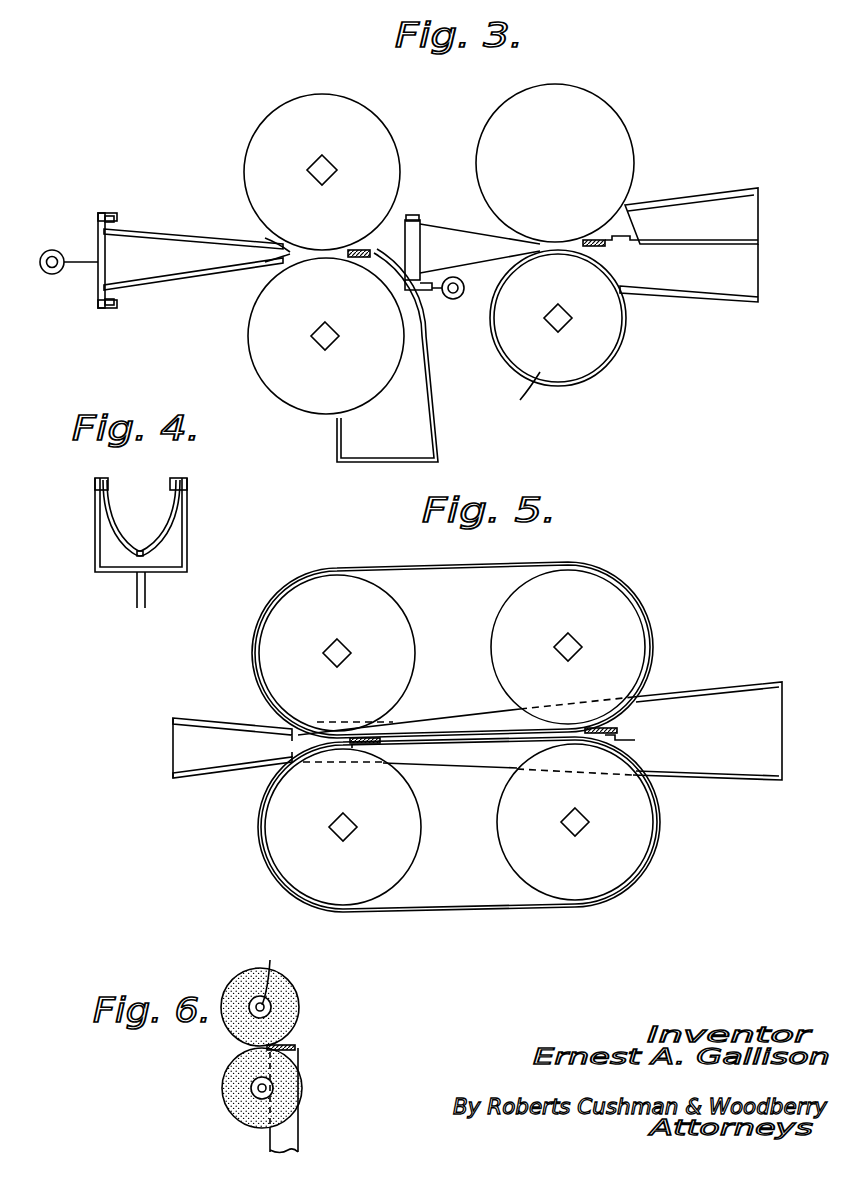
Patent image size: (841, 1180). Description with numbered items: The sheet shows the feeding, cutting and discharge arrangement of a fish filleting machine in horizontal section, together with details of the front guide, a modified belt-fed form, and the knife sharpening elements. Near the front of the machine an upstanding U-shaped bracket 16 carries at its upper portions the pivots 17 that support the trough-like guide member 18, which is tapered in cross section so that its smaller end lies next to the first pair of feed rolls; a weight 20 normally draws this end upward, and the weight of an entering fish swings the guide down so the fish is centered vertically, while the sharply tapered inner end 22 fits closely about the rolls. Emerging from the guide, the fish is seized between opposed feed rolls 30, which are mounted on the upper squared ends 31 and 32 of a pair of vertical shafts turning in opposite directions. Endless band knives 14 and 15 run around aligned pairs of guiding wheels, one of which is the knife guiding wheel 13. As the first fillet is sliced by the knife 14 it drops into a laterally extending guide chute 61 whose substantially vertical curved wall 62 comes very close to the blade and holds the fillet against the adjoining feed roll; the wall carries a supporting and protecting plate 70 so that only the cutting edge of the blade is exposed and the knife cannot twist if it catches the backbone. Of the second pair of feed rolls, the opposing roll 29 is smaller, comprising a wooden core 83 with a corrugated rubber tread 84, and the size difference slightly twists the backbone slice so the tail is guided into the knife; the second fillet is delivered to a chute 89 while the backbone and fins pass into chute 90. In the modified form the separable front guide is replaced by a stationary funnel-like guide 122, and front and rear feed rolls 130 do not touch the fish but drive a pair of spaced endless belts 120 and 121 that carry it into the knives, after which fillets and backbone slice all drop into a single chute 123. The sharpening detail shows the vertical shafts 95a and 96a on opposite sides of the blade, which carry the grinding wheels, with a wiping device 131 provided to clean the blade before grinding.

In FIG. 5, the knife guiding wheel 13 is at (378, 738).
In FIG. 3, the endless band knife 14 is at (358, 258).
In FIG. 5, the endless band knife 14 is at (352, 746).
In FIG. 3, the endless band knife 15 is at (600, 248).
In FIG. 5, the endless band knife 15 is at (633, 740).
In FIG. 3, the upstanding bracket 16 is at (107, 216).
In FIG. 4, the upstanding bracket 16 is at (97, 548).
In FIG. 4, the pivots 17 is at (95, 483).
In FIG. 3, the trough-like guide member 18 is at (192, 272).
In FIG. 4, the trough-like guide member 18 is at (168, 518).
In FIG. 3, the weight 20 is at (45, 274).
In FIG. 3, the sharply tapered inner end 22 is at (272, 246).
In FIG. 3, the opposing roll 29 is at (590, 358).
In FIG. 3, the feed rolls 30 is at (355, 112).
In FIG. 3, the upper squared shaft end 31 is at (318, 346).
In FIG. 3, the upper squared shaft end 32 is at (322, 186).
In FIG. 3, the guide chute 61 is at (420, 318).
In FIG. 3, the curved wall 62 is at (412, 300).
In FIG. 3, the supporting and protecting plate 70 is at (372, 252).
In FIG. 3, the wooden core 83 is at (518, 404).
In FIG. 3, the corrugated rubber tread 84 is at (628, 316).
In FIG. 3, the chute 89 is at (676, 202).
In FIG. 3, the chute 90 is at (728, 299).
In FIG. 5, the endless belt 120 is at (518, 908).
In FIG. 5, the endless belt 121 is at (522, 572).
In FIG. 5, the funnel-like guide 122 is at (196, 745).
In FIG. 5, the chute 123 is at (713, 698).
In FIG. 5, the feed rolls 130 is at (372, 604).
In FIG. 6, the wiping device 131 is at (290, 1009).
In FIG. 6, the vertical shaft 95a is at (266, 1090).
In FIG. 6, the vertical shaft 96a is at (280, 969).